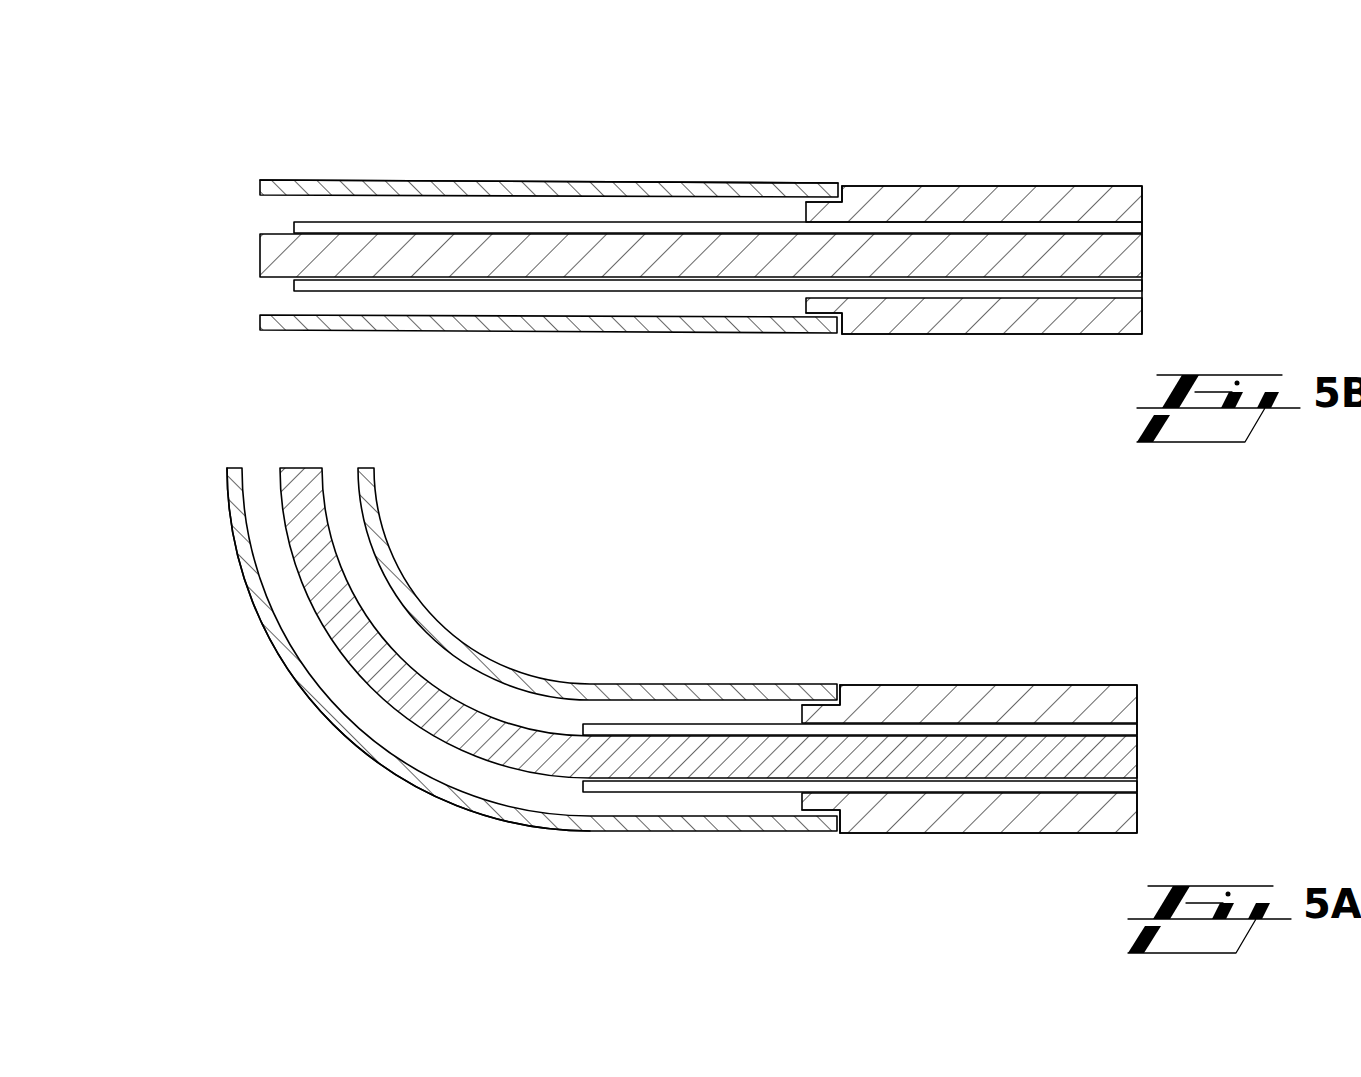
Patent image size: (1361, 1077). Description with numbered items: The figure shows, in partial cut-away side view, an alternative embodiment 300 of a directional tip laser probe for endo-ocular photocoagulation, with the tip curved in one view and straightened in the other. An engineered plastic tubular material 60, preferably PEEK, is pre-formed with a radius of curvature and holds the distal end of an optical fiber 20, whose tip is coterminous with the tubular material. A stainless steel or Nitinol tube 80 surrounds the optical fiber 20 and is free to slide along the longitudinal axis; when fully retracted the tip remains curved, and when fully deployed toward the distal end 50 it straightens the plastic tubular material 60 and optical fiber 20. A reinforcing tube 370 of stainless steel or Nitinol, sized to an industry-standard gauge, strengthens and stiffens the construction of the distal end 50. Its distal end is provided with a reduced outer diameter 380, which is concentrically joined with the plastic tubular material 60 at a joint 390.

In FIG. 5B, the optical fiber 20 is at (265, 252).
In FIG. 5A, the optical fiber 20 is at (302, 472).
In FIG. 5B, the distal end 50 is at (120, 185).
In FIG. 5A, the distal end 50 is at (250, 440).
In FIG. 5B, the plastic tubular material 60 is at (421, 180).
In FIG. 5A, the plastic tubular material 60 is at (400, 588).
In FIG. 5B, the tube 80 is at (466, 286).
In FIG. 5A, the tube 80 is at (645, 792).
In FIG. 5B, the alternative embodiment 300 is at (1190, 148).
In FIG. 5A, the alternative embodiment 300 is at (1005, 612).
In FIG. 5B, the reinforcing tube 370 is at (1006, 192).
In FIG. 5A, the reinforcing tube 370 is at (996, 808).
In FIG. 5B, the reduced outer diameter 380 is at (812, 312).
In FIG. 5A, the reduced outer diameter 380 is at (784, 712).
In FIG. 5B, the joint 390 is at (838, 185).
In FIG. 5A, the joint 390 is at (836, 832).